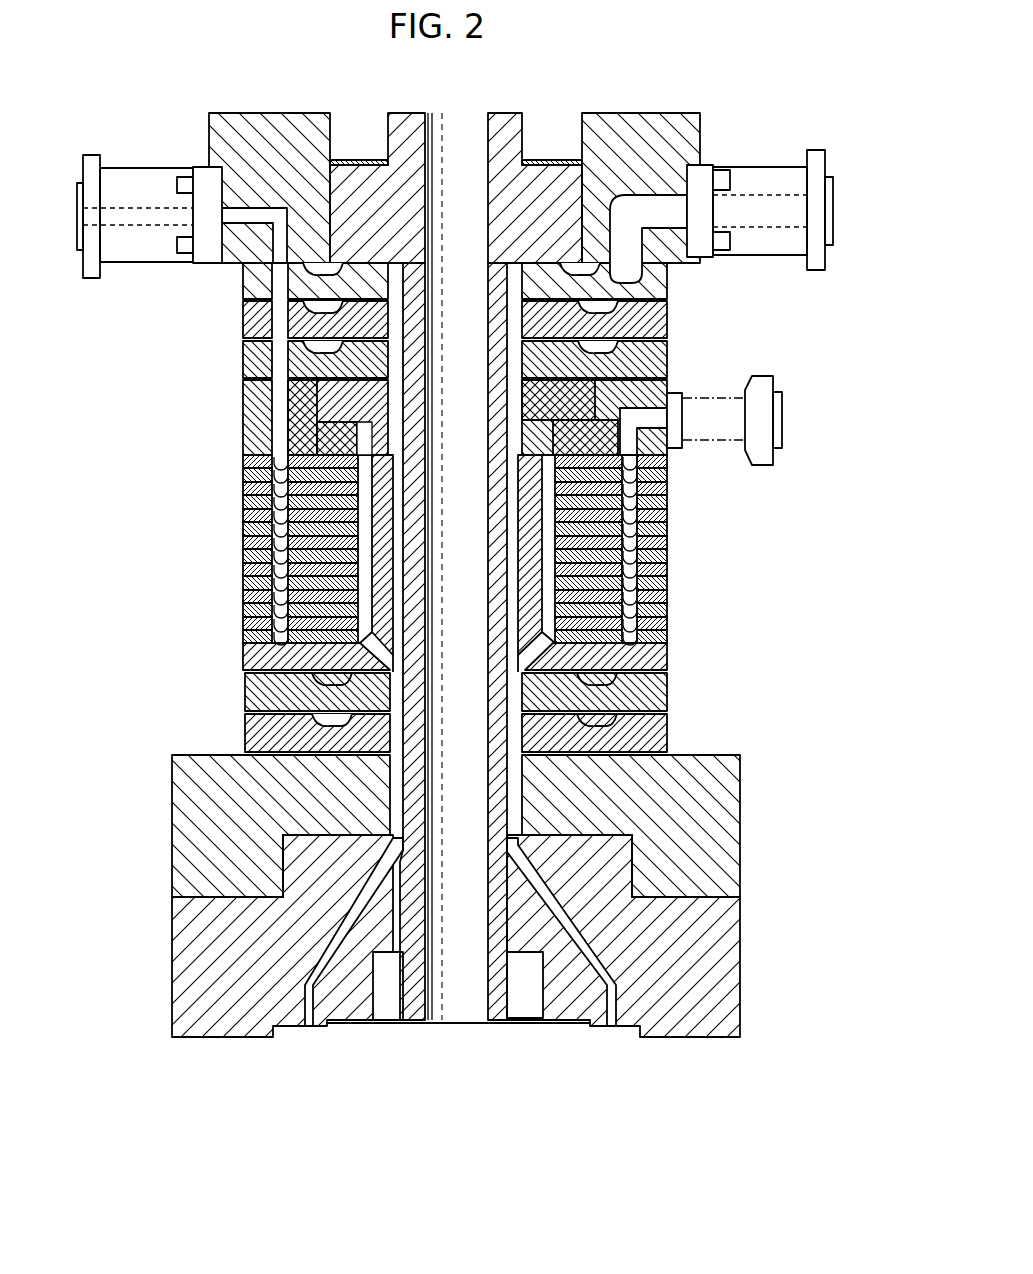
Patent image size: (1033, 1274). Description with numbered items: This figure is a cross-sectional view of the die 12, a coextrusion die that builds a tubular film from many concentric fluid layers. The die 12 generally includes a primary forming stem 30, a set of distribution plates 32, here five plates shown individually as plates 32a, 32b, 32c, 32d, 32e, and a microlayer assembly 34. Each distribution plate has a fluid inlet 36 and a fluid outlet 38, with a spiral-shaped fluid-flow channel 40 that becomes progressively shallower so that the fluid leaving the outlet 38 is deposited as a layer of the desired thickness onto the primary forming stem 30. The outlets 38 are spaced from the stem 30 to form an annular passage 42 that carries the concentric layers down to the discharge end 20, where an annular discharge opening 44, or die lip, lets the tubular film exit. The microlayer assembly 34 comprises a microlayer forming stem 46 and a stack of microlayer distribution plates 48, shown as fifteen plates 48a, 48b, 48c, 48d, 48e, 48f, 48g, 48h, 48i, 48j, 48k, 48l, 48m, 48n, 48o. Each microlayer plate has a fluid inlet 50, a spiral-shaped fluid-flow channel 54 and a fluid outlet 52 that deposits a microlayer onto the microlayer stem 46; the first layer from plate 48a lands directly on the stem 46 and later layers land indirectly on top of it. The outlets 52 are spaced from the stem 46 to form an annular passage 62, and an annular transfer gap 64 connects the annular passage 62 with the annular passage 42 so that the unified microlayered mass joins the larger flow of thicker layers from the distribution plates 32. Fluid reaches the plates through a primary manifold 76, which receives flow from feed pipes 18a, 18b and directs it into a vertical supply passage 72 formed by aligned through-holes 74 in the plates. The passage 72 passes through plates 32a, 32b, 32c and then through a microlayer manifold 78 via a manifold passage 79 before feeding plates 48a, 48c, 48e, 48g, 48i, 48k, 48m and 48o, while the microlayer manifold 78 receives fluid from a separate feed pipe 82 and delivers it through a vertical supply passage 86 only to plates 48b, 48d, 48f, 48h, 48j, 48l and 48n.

The die 12 is at (612, 108).
The supply pipe 18a is at (133, 168).
The feed pipe 18b is at (756, 165).
The discharge end 20 is at (232, 1040).
The primary forming stem 30 is at (500, 778).
The distribution plates 32 is at (243, 360).
The distribution plate 32a is at (660, 286).
The distribution plate 32b is at (648, 318).
The distribution plate 32c is at (660, 350).
The distribution plate 32d is at (660, 688).
The distribution plate 32e is at (660, 730).
The microlayer assembly 34 is at (243, 400).
The fluid inlet 36 is at (272, 688).
The fluid outlet 38 is at (500, 270).
The spiral-shaped fluid-flow channel 40 is at (588, 255).
The annular passage 42 is at (400, 312).
The annular discharge opening 44 is at (304, 1040).
The microlayer forming stem 46 is at (385, 538).
The microlayer distribution plates 48 is at (430, 556).
The microlayer distribution plate 48a is at (290, 458).
The microlayer distribution plate 48b is at (655, 472).
The microlayer distribution plate 48c is at (290, 488).
The microlayer distribution plate 48d is at (655, 498).
The microlayer distribution plate 48e is at (290, 514).
The microlayer distribution plate 48f is at (655, 525).
The microlayer distribution plate 48g is at (290, 541).
The microlayer distribution plate 48h is at (655, 551).
The microlayer distribution plate 48i is at (290, 567).
The microlayer distribution plate 48j is at (655, 578).
The microlayer distribution plate 48k is at (290, 596).
The microlayer distribution plate 48l is at (655, 605).
The microlayer distribution plate 48m is at (290, 623).
The microlayer distribution plate 48n is at (640, 640).
The microlayer distribution plate 48o is at (290, 652).
The fluid inlet 50 is at (282, 441).
The fluid outlet 52 is at (370, 588).
The spiral-shaped fluid-flow channel 54 is at (598, 455).
The annular passage 62 is at (380, 479).
The annular transfer gap 64 is at (400, 668).
The vertical supply passage 72 is at (272, 320).
The through-holes 74 is at (280, 472).
The primary manifold 76 is at (208, 122).
The microlayer manifold 78 is at (662, 440).
The manifold passage 79 is at (280, 414).
The feed pipe 82 is at (786, 416).
The vertical supply passage 86 is at (640, 423).